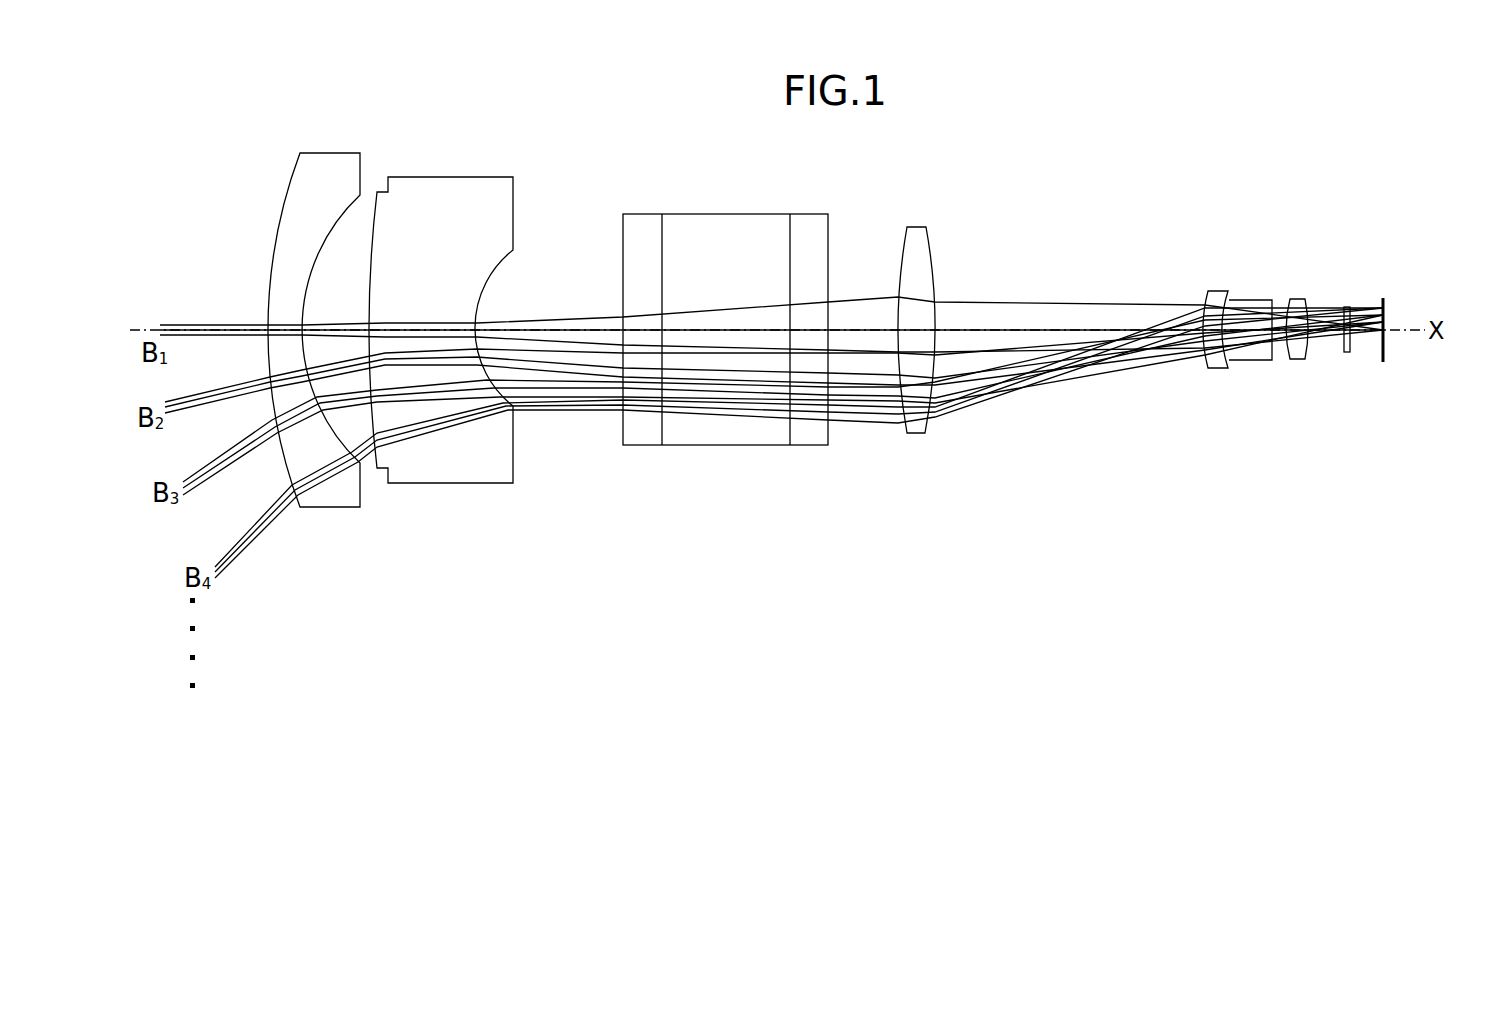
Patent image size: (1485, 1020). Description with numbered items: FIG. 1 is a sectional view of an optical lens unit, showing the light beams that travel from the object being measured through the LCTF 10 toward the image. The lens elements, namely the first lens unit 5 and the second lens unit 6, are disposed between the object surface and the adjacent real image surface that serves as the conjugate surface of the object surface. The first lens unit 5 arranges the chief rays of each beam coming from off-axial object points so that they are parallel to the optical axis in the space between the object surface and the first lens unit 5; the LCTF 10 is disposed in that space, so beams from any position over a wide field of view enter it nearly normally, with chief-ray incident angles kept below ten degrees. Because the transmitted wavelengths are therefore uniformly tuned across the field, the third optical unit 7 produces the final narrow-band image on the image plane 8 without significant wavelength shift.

The first lens unit 5 is at (523, 145).
The LCTF 10 is at (734, 206).
The second lens unit 6 is at (917, 219).
The third optical unit 7 is at (1327, 280).
The image plane (imaging surface) 8 is at (1394, 302).